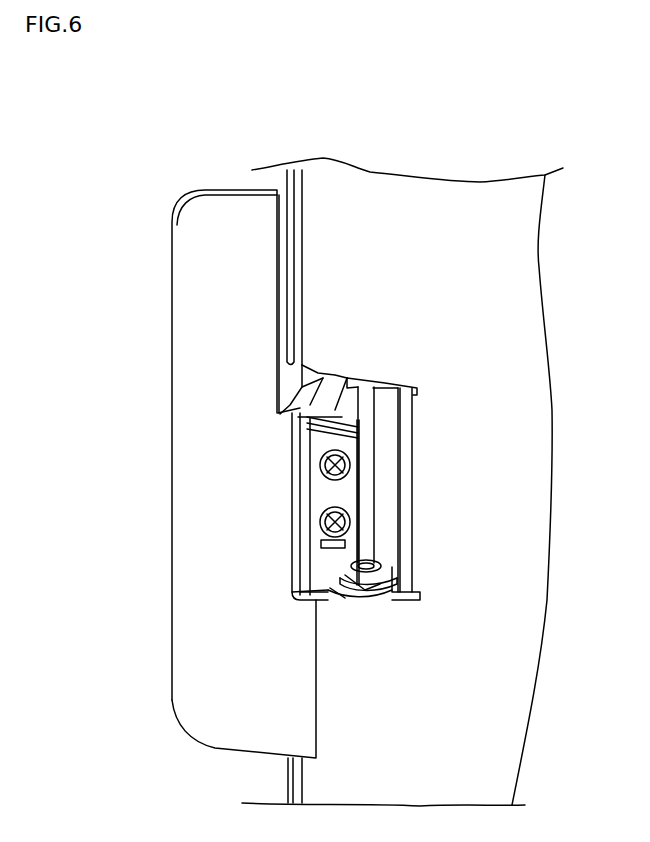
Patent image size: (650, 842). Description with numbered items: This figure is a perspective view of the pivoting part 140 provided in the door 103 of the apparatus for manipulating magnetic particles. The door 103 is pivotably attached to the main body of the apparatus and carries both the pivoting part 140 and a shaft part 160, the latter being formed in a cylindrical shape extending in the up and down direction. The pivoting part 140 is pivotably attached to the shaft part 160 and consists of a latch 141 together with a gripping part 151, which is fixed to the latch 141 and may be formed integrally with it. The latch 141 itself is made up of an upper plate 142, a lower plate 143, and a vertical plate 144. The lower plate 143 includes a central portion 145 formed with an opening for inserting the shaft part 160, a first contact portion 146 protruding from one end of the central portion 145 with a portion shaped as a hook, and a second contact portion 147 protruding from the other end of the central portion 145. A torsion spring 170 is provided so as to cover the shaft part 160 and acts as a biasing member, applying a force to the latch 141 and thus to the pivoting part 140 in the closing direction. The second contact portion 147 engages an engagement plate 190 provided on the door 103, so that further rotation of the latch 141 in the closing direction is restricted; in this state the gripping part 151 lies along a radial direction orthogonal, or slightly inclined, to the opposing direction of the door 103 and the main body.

The door 103 is at (411, 207).
The pivoting part 140 is at (130, 400).
The latch 141 is at (365, 597).
The upper plate 142 is at (327, 378).
The lower plate 143 is at (342, 608).
The vertical plate 144 is at (295, 550).
The central portion 145 is at (395, 592).
The first contact portion 146 is at (328, 590).
The second contact portion 147 is at (406, 560).
The gripping part 151 is at (203, 573).
The shaft part 160 is at (368, 410).
The torsion spring 170 is at (360, 525).
The engagement plate 190 is at (392, 448).